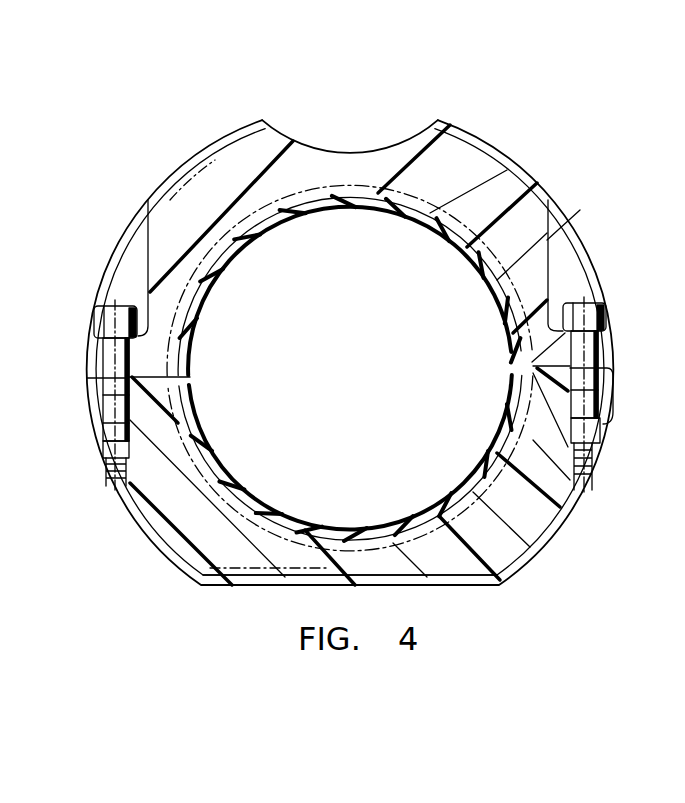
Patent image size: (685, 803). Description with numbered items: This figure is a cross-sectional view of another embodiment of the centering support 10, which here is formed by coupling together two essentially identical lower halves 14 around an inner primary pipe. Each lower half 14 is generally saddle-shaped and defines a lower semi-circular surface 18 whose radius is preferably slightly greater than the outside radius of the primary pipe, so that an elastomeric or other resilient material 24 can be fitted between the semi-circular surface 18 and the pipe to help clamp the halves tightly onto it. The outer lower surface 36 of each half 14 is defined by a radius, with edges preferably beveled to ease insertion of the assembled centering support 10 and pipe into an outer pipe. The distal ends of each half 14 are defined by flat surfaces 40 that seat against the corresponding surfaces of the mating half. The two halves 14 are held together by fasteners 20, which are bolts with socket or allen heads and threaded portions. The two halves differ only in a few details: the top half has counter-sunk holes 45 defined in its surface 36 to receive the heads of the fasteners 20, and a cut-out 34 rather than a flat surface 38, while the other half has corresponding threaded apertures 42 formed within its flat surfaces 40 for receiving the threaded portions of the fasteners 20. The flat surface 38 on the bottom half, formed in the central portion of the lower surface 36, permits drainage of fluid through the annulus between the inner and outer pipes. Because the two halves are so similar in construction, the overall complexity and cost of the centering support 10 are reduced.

The centering support 10 is at (404, 102).
The lower half 14 is at (462, 153).
The lower semi-circular surface 18 is at (279, 222).
The fastener 20 is at (100, 302).
The resilient material 24 is at (396, 212).
The cut-out 34 is at (310, 148).
The lower surface 36 is at (198, 155).
The flat surface 38 is at (273, 587).
The flat surface 40 is at (172, 380).
The threaded aperture 42 is at (108, 477).
The counter-sunk hole 45 is at (142, 245).